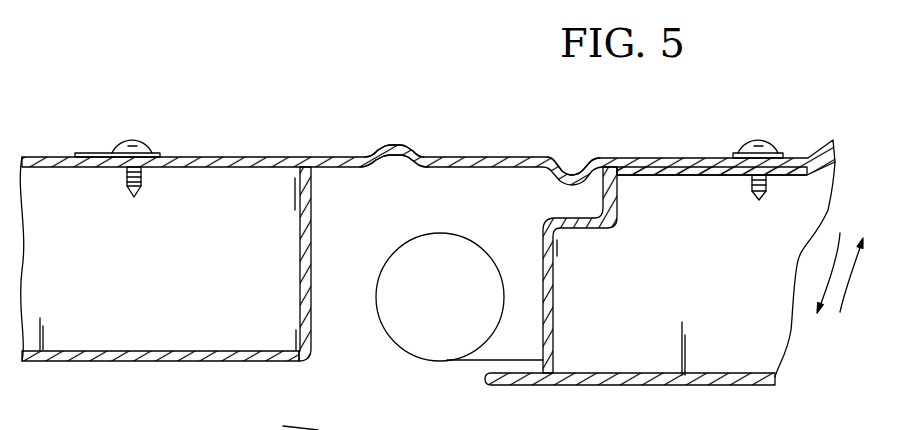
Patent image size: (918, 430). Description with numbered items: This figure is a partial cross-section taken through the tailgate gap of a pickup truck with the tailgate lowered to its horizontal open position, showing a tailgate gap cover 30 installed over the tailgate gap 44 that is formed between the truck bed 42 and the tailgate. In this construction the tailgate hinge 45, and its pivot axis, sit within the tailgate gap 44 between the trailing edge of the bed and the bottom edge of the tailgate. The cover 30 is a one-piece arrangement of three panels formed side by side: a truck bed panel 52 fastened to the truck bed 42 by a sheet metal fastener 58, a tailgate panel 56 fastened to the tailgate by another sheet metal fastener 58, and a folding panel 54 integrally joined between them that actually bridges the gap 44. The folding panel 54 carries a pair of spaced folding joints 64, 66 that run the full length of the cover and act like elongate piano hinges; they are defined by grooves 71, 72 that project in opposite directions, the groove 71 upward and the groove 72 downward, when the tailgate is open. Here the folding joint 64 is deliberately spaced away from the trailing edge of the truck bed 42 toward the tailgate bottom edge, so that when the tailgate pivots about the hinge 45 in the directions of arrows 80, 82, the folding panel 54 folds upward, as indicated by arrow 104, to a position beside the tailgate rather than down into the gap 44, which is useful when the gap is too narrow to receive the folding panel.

The tailgate gap cover 30 is at (371, 58).
The truck bed 42 is at (42, 157).
The tailgate gap 44 is at (382, 356).
The tailgate hinge 45 is at (445, 362).
The truck bed panel 52 is at (243, 157).
The folding panel 54 is at (482, 157).
The tailgate panel 56 is at (653, 157).
The sheet metal fastener 58 is at (133, 140).
The folding joint 64 is at (376, 151).
The folding joint 66 is at (557, 162).
The groove 71 is at (386, 164).
The groove 72 is at (569, 162).
The arrow 80 is at (833, 272).
The arrow 82 is at (846, 308).
The arrow 104 is at (397, 135).